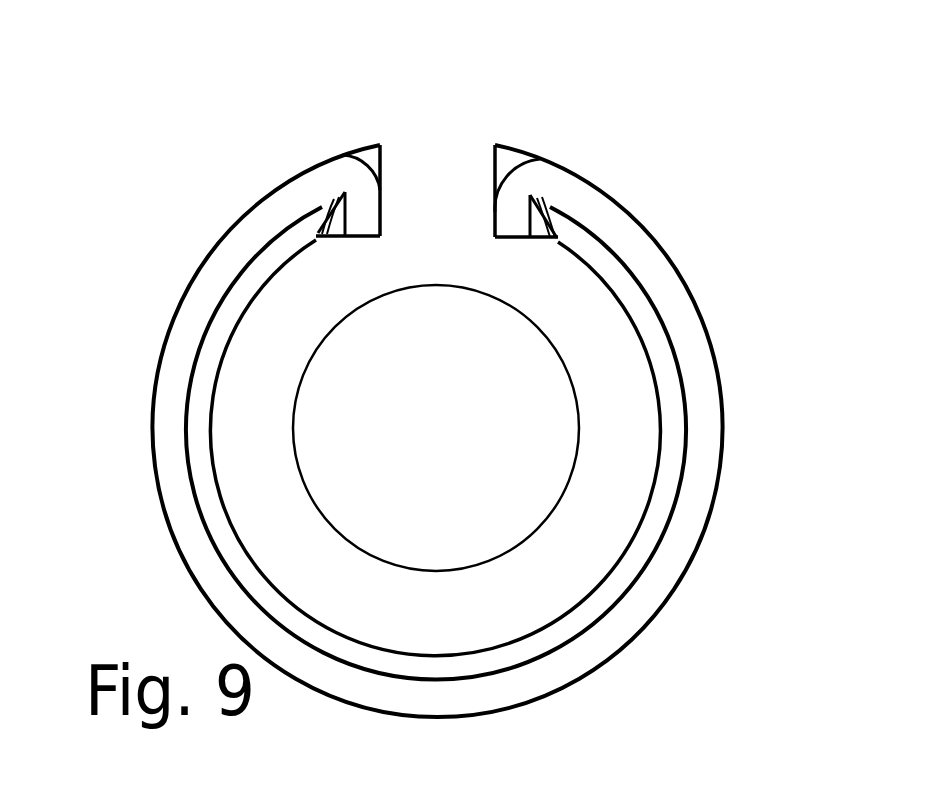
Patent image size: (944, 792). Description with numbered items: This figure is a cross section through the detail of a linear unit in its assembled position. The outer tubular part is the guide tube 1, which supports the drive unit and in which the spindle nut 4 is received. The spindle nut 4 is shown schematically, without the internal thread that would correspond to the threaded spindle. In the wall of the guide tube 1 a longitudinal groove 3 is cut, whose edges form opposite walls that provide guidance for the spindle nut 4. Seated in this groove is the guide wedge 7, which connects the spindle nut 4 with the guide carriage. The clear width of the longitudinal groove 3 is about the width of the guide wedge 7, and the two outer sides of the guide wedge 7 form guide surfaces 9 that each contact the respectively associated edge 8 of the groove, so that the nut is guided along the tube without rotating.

The guide tube 1 is at (602, 213).
The longitudinal groove 3 is at (507, 163).
The spindle nut 4 is at (620, 420).
The guide wedge 7 is at (405, 165).
The edge 8 is at (360, 216).
The guide surface 9 is at (380, 190).